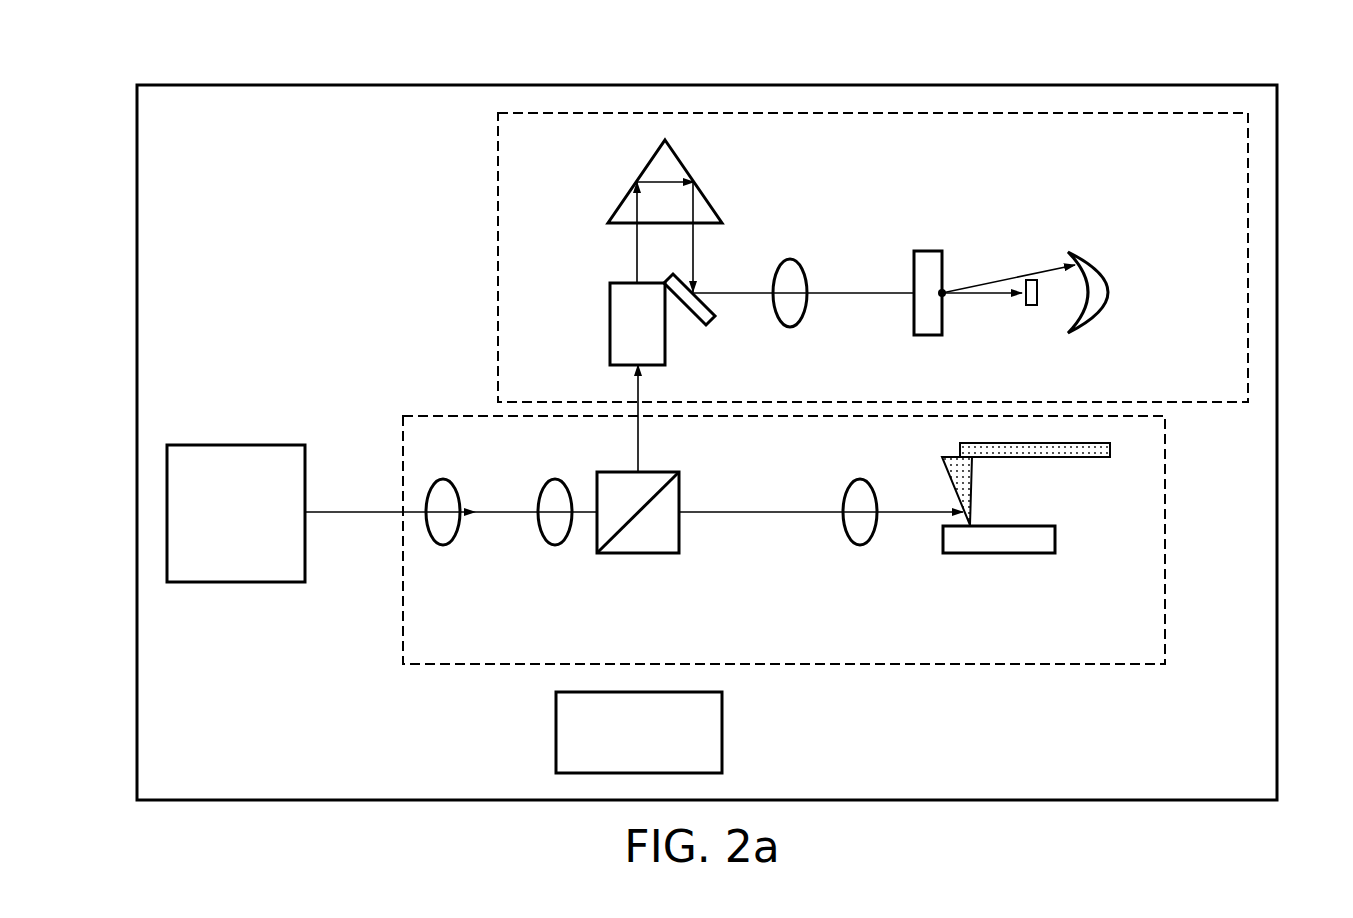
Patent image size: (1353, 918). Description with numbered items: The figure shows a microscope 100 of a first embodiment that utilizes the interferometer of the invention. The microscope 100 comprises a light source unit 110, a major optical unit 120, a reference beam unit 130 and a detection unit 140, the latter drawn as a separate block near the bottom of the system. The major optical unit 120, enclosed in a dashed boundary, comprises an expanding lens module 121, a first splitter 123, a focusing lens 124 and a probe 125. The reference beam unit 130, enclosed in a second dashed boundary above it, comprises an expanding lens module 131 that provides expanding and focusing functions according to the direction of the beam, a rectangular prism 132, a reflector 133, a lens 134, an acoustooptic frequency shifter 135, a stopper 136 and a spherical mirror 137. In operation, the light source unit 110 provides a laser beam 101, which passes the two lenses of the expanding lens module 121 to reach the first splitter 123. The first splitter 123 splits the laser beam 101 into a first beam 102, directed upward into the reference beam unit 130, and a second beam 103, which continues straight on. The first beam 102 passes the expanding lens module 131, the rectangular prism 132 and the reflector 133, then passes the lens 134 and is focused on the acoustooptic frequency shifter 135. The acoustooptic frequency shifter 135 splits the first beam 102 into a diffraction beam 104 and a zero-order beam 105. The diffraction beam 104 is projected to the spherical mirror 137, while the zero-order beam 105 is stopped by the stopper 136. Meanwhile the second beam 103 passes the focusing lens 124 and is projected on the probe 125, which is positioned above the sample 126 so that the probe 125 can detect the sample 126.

The microscope 100 is at (103, 85).
The laser beam 101 is at (353, 510).
The first beam 102 is at (638, 445).
The second beam 103 is at (763, 515).
The diffraction beam 104 is at (1007, 274).
The zero-order beam 105 is at (983, 297).
The light source unit 110 is at (214, 526).
The major optical unit 120 is at (1165, 524).
The expanding lens module 121 is at (443, 545).
The first splitter 123 is at (679, 487).
The focusing lens 124 is at (860, 545).
The probe 125 is at (967, 490).
The sample 126 is at (1055, 538).
The reference beam unit 130 is at (1248, 252).
The expanding lens module 131 is at (610, 323).
The rectangular prism 132 is at (650, 159).
The reflector 133 is at (712, 324).
The lens 134 is at (790, 259).
The acoustooptic frequency shifter 135 is at (927, 251).
The stopper 136 is at (1031, 306).
The spherical mirror 137 is at (1113, 292).
The detection unit 140 is at (617, 746).